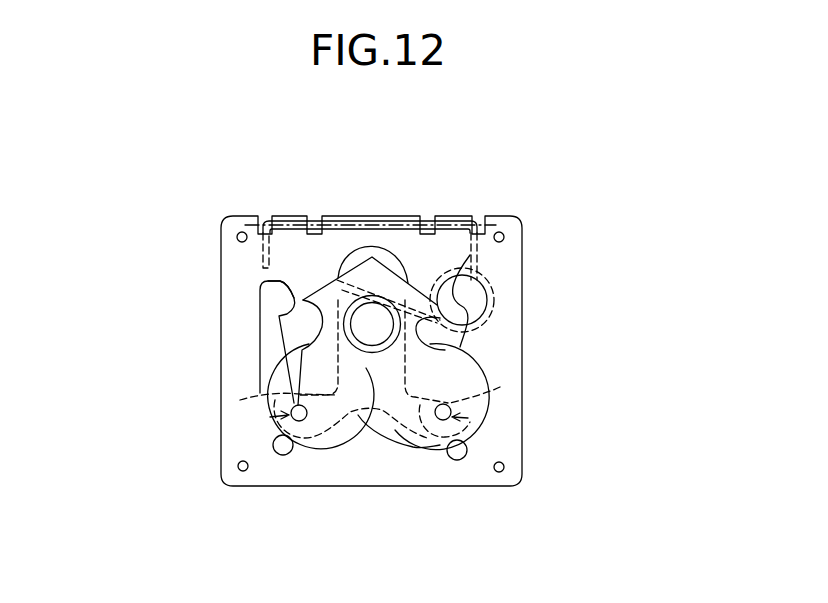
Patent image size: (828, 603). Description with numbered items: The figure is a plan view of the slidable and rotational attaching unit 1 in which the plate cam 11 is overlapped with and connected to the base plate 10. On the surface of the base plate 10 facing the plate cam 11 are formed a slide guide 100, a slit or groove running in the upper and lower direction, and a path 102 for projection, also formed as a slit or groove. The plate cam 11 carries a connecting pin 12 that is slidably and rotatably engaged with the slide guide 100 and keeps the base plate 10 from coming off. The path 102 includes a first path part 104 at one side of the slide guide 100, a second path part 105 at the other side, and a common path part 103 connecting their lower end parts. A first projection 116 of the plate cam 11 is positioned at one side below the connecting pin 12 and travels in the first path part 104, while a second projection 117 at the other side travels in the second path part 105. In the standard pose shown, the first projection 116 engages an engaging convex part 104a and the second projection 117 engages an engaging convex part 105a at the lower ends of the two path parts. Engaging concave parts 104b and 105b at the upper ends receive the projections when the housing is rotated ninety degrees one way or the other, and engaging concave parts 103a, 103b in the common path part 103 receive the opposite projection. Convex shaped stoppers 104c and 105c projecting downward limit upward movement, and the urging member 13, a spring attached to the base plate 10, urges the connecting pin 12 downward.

The slidable and rotational attaching unit 1 is at (540, 206).
The base plate 10 is at (235, 257).
The plate cam 11 is at (415, 262).
The connecting pin 12 is at (333, 281).
The urging member 13 is at (485, 262).
The slide guide 100 is at (351, 290).
The path for projection 102 is at (243, 370).
The common path part 103 is at (345, 446).
The engaging concave part 103a is at (280, 455).
The engaging concave part 103b is at (462, 458).
The first path part 104 is at (258, 347).
The engaging convex part 104a is at (270, 418).
The engaging concave part 104b is at (257, 298).
The convex shaped stopper 104c is at (240, 400).
The second path part 105 is at (480, 350).
The engaging convex part 105a is at (468, 418).
The engaging concave part 105b is at (462, 268).
The convex shaped stopper 105c is at (500, 387).
The first projection 116 is at (301, 422).
The second projection 117 is at (443, 421).